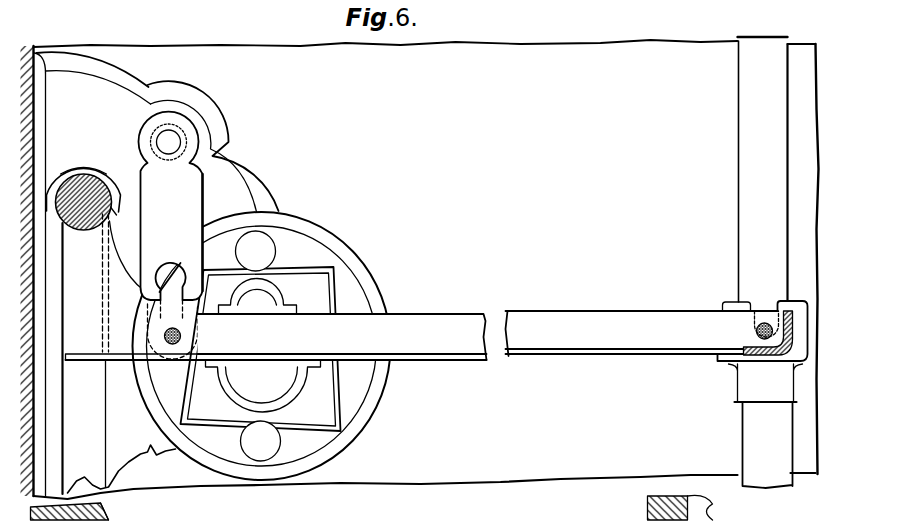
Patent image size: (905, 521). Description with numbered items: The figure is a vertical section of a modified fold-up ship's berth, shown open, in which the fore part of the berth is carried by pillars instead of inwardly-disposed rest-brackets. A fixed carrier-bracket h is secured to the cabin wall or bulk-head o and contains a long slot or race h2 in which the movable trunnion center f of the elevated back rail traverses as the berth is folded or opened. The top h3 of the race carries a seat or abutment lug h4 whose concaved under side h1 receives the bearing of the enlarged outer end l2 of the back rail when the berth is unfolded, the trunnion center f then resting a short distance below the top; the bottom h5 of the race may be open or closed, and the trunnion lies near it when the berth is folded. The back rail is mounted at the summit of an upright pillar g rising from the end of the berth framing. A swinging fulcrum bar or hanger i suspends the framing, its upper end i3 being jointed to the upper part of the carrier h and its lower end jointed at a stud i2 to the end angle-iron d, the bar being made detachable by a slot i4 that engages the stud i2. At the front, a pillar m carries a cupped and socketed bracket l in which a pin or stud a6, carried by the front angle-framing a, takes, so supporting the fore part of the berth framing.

The cabin-wall or bulk-head o is at (420, 269).
The fixed carrier-brackets h is at (253, 178).
The concaved under sides h1 is at (94, 159).
The slots or races h2 is at (90, 424).
The tops of the races h3 is at (53, 181).
The seat or abutment lugs h4 is at (76, 163).
The bottoms of the races h5 is at (122, 469).
The trunnion centers f is at (88, 196).
The upright pillars g is at (130, 358).
The cupped and socketed brackets l is at (113, 219).
The link end l2 is at (117, 208).
The swinging fulcra bars or hangers i is at (171, 206).
The lower joints or studs i2 is at (163, 342).
The upper ends of the fulcra bars i3 is at (178, 133).
The slots i4 is at (170, 277).
The end angle-irons d is at (440, 309).
The pillars m is at (765, 262).
The front angle-framing a is at (763, 331).
The pins or studs a6 is at (749, 327).